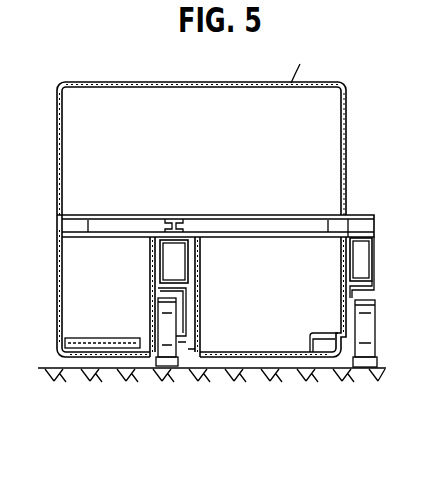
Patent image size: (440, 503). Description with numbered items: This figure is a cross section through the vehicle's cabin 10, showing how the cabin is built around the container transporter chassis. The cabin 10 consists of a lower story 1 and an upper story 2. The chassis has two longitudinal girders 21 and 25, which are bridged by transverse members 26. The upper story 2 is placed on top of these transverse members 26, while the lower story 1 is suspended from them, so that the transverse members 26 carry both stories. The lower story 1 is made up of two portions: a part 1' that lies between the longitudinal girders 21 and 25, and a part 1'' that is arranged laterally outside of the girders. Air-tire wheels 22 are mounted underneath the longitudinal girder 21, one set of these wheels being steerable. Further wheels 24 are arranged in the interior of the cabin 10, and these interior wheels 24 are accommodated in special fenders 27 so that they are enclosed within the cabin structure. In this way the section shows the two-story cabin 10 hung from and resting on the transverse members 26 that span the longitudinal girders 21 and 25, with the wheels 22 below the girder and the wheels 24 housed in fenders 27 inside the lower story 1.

The lower story 1 is at (189, 286).
The part of the lower story 1' is at (285, 376).
The part of the lower story 1'' is at (102, 372).
The upper story 2 is at (56, 161).
The cabin 10 is at (305, 63).
The longitudinal girder 21 is at (362, 268).
The air-tire wheels 22 is at (364, 353).
The wheels 24 is at (164, 360).
The longitudinal girder 25 is at (174, 262).
The transverse members 26 is at (358, 222).
The fenders 27 is at (188, 348).